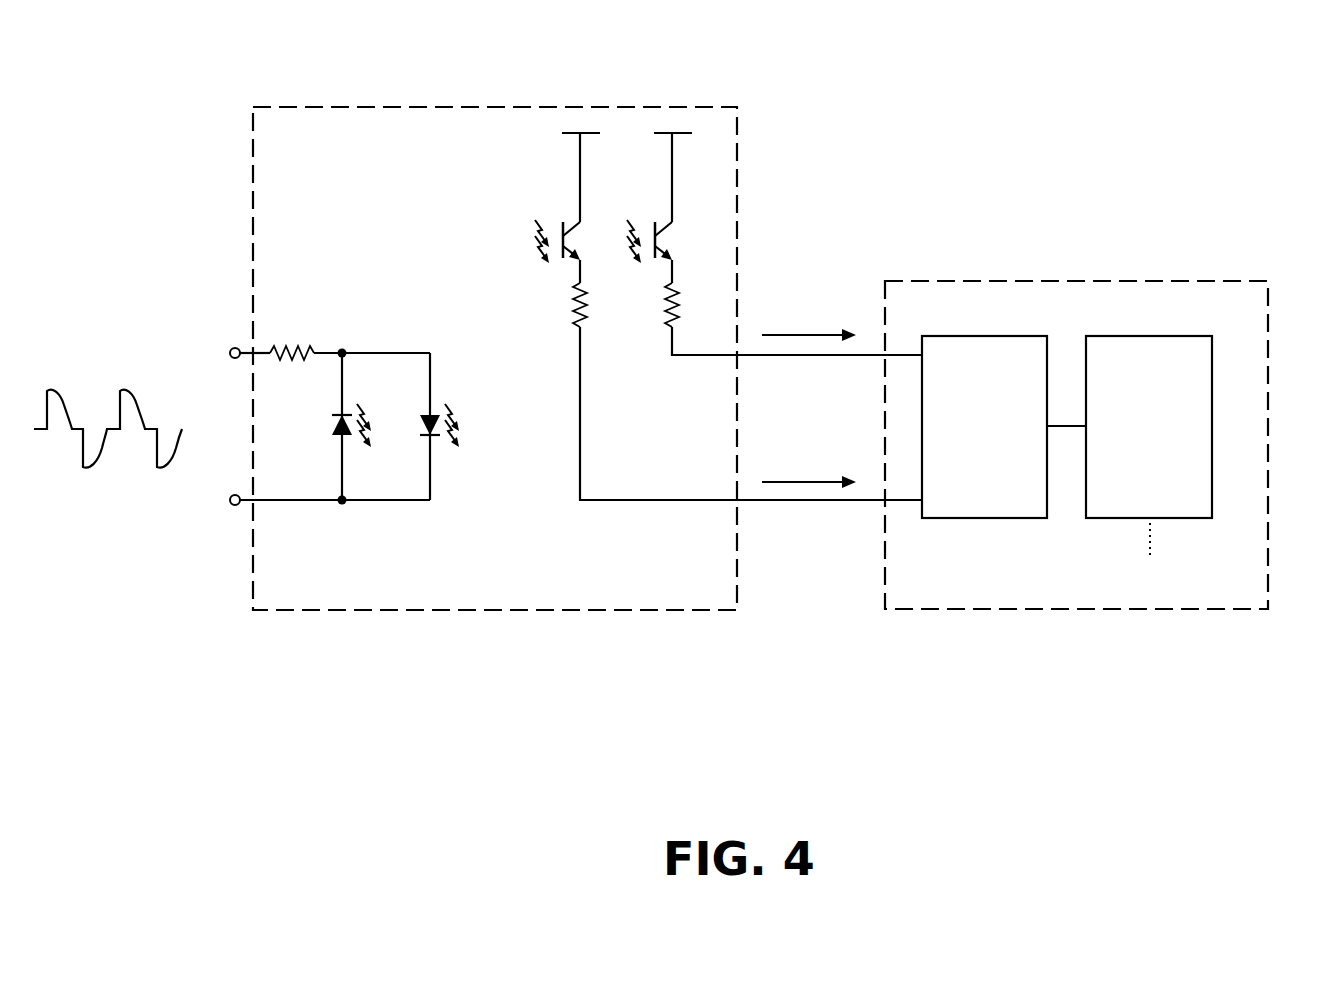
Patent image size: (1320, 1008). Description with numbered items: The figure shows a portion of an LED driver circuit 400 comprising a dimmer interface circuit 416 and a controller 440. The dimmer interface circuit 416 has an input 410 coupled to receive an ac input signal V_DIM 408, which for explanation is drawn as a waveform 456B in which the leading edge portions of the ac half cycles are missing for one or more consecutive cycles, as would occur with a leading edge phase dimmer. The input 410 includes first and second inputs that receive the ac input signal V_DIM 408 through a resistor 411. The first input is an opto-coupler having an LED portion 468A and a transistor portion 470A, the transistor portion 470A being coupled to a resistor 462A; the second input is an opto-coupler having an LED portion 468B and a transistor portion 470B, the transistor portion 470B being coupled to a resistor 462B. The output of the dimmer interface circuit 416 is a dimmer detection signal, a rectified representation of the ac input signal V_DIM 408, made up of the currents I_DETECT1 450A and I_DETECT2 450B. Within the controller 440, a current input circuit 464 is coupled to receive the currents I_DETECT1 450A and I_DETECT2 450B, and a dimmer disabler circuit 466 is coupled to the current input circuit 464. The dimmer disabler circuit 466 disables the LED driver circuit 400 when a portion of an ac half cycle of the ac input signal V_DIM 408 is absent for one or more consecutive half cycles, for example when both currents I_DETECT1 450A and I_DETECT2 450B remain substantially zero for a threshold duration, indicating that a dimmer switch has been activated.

The LED driver circuit 400 is at (1260, 87).
The ac input signal V_DIM 408 is at (197, 402).
The input 410 is at (235, 347).
The resistor 411 is at (289, 347).
The dimmer interface circuit 416 is at (585, 611).
The controller 440 is at (1240, 611).
The current I_DETECT1 450A is at (801, 305).
The current I_DETECT2 450B is at (783, 458).
The waveform 456B is at (92, 480).
The resistor 462A is at (655, 318).
The resistor 462B is at (563, 318).
The current input circuit 464 is at (975, 519).
The dimmer disabler circuit 466 is at (1185, 519).
The LED portion 468A is at (441, 395).
The LED portion 468B is at (353, 395).
The transistor portion 470A is at (656, 221).
The transistor portion 470B is at (553, 221).